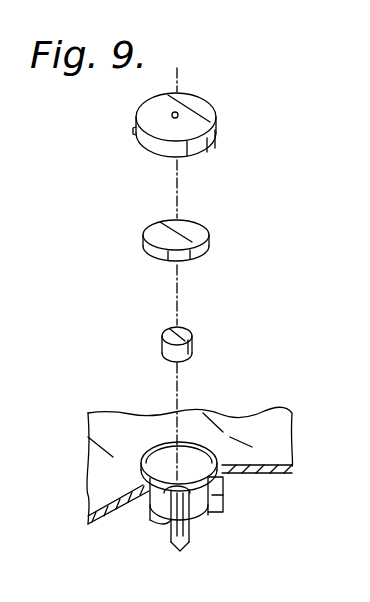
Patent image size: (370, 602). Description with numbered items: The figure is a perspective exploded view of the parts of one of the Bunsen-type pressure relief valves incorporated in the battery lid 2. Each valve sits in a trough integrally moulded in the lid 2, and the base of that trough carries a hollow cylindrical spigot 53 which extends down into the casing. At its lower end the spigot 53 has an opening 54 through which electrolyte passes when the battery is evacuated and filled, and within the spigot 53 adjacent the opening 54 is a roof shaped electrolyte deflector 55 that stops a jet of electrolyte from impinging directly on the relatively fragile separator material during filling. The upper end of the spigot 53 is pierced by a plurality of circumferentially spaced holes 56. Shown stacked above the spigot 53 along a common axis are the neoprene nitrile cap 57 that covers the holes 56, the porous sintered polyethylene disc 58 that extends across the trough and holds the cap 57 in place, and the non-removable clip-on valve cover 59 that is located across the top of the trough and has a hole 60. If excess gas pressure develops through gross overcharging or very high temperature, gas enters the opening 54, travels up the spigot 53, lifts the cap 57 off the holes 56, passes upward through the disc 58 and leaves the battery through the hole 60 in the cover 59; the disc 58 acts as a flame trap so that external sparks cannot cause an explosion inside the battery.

The lid 2 is at (123, 417).
The hollow cylindrical spigot 53 is at (195, 508).
The opening 54 is at (186, 528).
The roof shaped electrolyte deflector 55 is at (184, 547).
The circumferentially spaced holes 56 is at (180, 488).
The neoprene nitrile cap 57 is at (191, 333).
The porous sintered polyethylene disc 58 is at (209, 233).
The clip-on valve cover 59 is at (210, 107).
The hole 60 is at (172, 114).